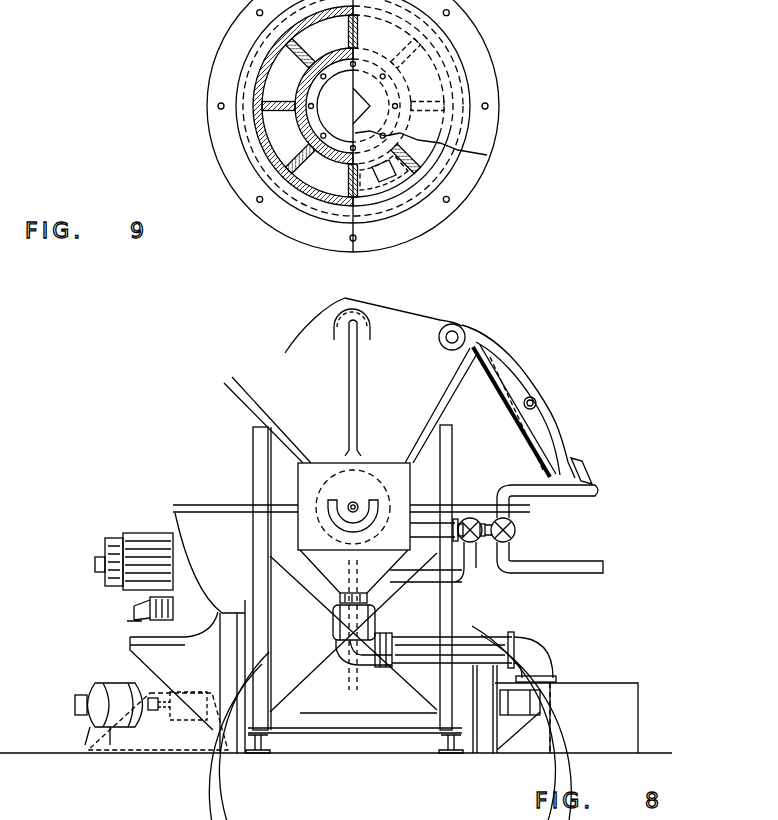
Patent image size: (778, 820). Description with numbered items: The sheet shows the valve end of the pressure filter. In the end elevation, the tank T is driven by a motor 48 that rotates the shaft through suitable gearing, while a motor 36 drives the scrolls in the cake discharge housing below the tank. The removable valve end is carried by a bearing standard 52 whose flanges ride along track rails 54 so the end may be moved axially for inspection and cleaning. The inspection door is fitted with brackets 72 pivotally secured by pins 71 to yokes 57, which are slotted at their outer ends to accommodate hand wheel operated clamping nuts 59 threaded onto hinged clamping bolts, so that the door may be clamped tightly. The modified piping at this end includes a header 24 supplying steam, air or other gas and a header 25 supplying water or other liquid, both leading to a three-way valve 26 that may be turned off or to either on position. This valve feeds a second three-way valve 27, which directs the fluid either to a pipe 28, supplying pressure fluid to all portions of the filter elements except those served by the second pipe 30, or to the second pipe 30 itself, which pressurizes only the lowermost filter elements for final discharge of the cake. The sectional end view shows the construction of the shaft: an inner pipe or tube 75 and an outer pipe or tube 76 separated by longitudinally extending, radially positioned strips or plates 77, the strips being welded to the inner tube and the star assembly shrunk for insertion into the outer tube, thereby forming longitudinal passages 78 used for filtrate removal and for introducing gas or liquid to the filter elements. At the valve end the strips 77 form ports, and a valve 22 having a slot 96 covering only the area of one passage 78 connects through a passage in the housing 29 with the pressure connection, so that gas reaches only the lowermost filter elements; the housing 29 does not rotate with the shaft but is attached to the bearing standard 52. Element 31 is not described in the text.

In FIG. 9, the housing 29 is at (250, 190).
In FIG. 9, the outer pipe or tube 76 is at (252, 109).
In FIG. 9, the longitudinal passages 78 is at (315, 50).
In FIG. 9, the inner pipe or tube 75 is at (312, 136).
In FIG. 9, the strips or plates 77 is at (307, 168).
In FIG. 9, the valve 22 is at (405, 183).
In FIG. 9, the slot 96 is at (378, 178).
In FIG. 8, the tank T is at (222, 427).
In FIG. 8, the yokes 57 is at (510, 349).
In FIG. 8, the pins 71 is at (537, 403).
In FIG. 8, the brackets 72 is at (556, 433).
In FIG. 8, the hand wheel operated clamping nuts 59 is at (592, 471).
In FIG. 8, the header 24 is at (578, 497).
In FIG. 8, the header 25 is at (600, 573).
In FIG. 8, the three-way valve 26 is at (514, 530).
In FIG. 8, the second three-way valve 27 is at (472, 520).
In FIG. 8, the second pipe 30 is at (416, 533).
In FIG. 8, the pipe 28 is at (416, 580).
In FIG. 8, the motor 48 is at (140, 540).
In FIG. 8, the bearing standard 52 is at (265, 566).
In FIG. 8, the motor 36 is at (98, 680).
In FIG. 8, the tank 31 is at (613, 687).
In FIG. 8, the track rails 54 is at (262, 752).